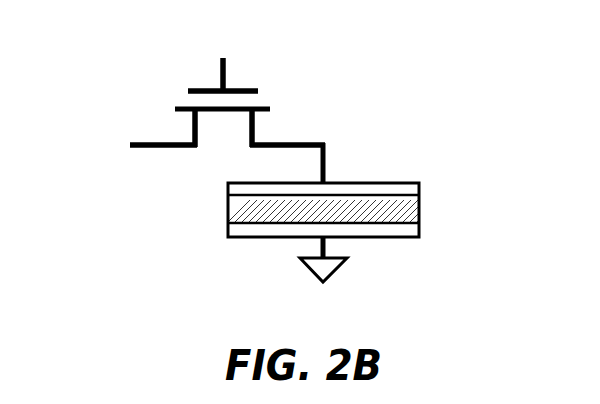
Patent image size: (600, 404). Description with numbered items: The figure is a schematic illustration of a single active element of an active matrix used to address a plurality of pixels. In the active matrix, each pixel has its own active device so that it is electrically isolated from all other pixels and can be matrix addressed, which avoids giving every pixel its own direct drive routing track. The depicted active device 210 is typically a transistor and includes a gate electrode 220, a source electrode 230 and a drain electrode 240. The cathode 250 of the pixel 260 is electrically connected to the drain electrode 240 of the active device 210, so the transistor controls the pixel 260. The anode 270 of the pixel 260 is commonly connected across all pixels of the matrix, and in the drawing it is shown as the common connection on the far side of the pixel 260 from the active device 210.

The active device 210 is at (158, 77).
The gate electrode 220 is at (245, 89).
The source electrode 230 is at (190, 130).
The drain electrode 240 is at (255, 128).
The cathode 250 is at (326, 163).
The pixel 260 is at (419, 210).
The anode 270 is at (336, 268).